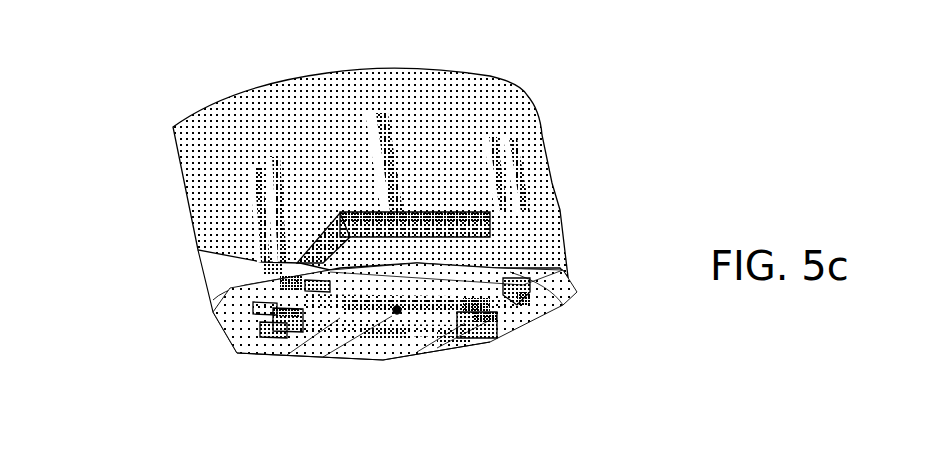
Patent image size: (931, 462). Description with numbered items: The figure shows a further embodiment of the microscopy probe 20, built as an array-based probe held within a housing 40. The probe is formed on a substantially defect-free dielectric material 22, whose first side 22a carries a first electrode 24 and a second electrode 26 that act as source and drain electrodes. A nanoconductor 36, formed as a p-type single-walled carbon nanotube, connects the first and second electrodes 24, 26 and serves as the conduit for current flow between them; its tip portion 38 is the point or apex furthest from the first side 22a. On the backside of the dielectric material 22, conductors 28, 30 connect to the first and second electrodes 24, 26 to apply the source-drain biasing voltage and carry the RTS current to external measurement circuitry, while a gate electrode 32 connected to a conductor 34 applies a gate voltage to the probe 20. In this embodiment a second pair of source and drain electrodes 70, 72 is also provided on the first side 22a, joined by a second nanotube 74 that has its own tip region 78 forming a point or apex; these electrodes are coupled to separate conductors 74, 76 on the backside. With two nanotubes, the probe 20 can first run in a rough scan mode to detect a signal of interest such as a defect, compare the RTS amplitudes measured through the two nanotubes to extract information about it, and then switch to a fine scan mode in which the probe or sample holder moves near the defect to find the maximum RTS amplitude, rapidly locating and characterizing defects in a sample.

The microscopy probe 20 is at (115, 272).
The dielectric material 22 is at (505, 258).
The first side 22a is at (436, 342).
The first electrode 24 is at (277, 327).
The second electrode 26 is at (477, 337).
The conductor 28 is at (247, 214).
The conductor 30 is at (484, 142).
The gate electrode 32 is at (450, 213).
The conductor 34 is at (383, 135).
The nanoconductor 36 is at (347, 327).
The tip portion 38 is at (363, 335).
The housing 40 is at (192, 232).
The second source electrode 70 is at (300, 295).
The second drain electrode 72 is at (517, 297).
The second nanotube 74 is at (277, 167).
The conductor 76 is at (517, 163).
The tip region 78 is at (417, 282).